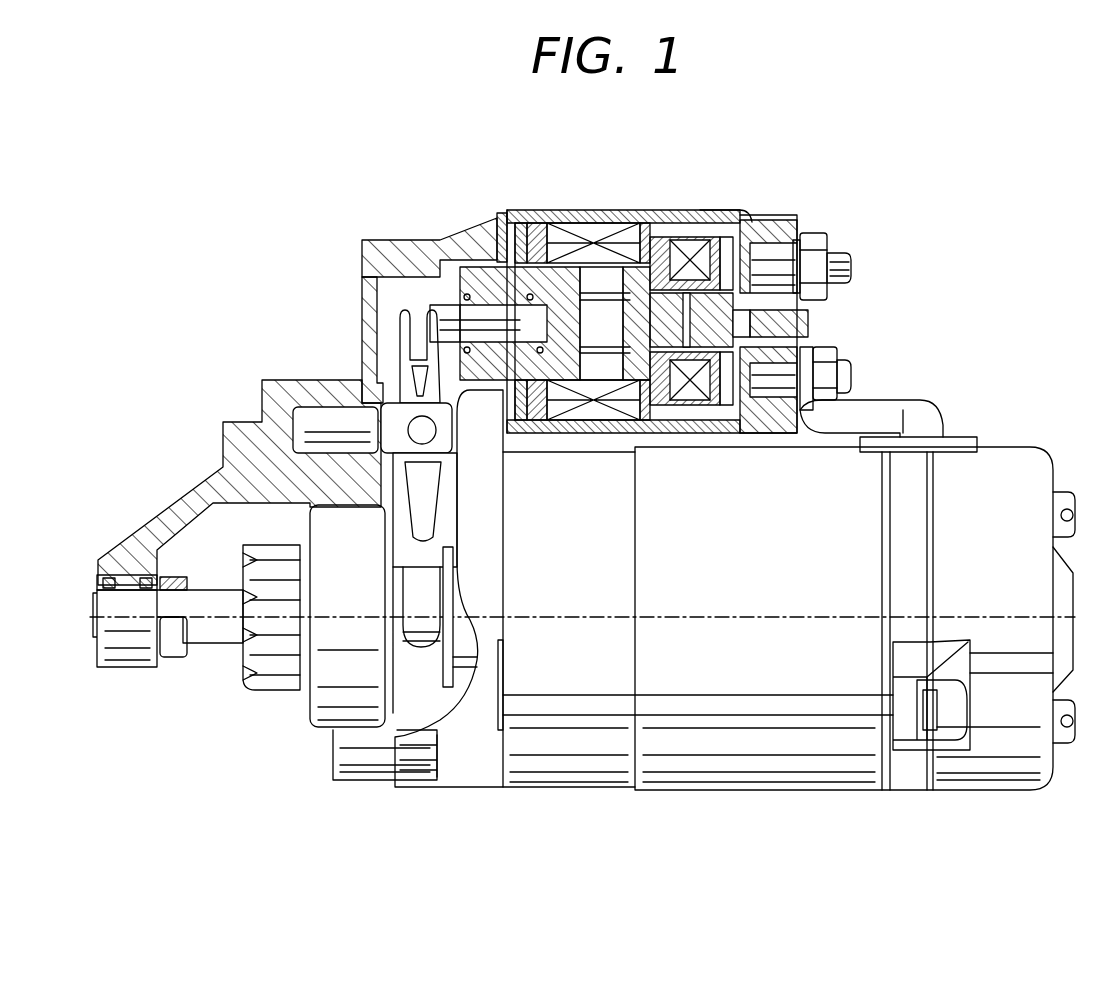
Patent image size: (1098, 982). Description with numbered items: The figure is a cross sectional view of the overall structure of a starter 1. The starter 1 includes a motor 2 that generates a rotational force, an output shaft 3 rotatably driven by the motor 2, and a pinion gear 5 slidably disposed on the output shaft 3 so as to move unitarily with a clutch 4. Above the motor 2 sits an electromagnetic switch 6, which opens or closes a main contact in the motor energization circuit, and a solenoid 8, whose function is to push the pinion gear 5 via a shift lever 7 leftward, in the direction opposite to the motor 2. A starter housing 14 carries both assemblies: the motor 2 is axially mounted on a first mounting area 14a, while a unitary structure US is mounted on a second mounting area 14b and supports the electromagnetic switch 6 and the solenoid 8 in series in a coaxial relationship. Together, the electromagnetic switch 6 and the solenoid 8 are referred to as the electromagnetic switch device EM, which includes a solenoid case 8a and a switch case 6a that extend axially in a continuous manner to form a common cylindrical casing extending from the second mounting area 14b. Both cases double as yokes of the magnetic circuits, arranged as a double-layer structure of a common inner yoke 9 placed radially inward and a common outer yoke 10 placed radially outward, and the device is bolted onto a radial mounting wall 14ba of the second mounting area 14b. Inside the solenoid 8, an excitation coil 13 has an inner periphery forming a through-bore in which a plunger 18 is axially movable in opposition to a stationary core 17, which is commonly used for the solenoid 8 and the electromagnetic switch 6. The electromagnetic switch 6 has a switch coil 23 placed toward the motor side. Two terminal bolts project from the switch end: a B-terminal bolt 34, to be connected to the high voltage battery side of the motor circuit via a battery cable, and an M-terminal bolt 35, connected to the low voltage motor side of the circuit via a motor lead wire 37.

The starter 1 is at (370, 190).
The motor 2 is at (818, 793).
The output shaft 3 is at (212, 632).
The clutch 4 is at (330, 710).
The pinion gear 5 is at (277, 682).
The electromagnetic switch 6 is at (732, 202).
The switch case 6a is at (715, 207).
The shift lever 7 is at (403, 383).
The solenoid 8 is at (534, 204).
The solenoid case 8a is at (519, 212).
The inner yoke 9 is at (582, 226).
The outer yoke 10 is at (612, 222).
The excitation coil 13 is at (557, 226).
The starter housing 14 is at (227, 430).
The first mounting area 14a is at (357, 470).
The second mounting area 14b is at (383, 252).
The radial mounting wall 14ba is at (513, 207).
The stationary core 17 is at (668, 232).
The plunger 18 is at (477, 292).
The switch coil 23 is at (693, 248).
The B-terminal bolt 34 is at (840, 262).
The M-terminal bolt 35 is at (843, 375).
The motor lead wire 37 is at (927, 415).
The unitary structure US is at (675, 206).
The electromagnetic switch device EM is at (799, 210).